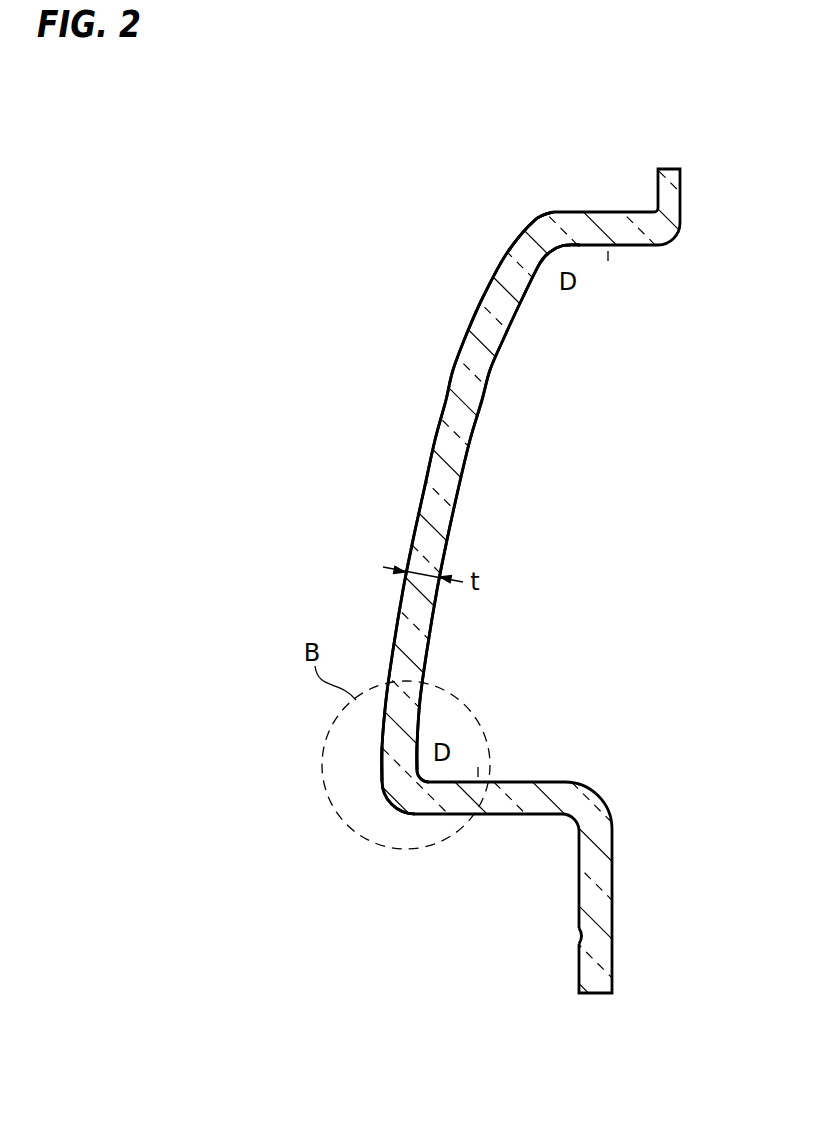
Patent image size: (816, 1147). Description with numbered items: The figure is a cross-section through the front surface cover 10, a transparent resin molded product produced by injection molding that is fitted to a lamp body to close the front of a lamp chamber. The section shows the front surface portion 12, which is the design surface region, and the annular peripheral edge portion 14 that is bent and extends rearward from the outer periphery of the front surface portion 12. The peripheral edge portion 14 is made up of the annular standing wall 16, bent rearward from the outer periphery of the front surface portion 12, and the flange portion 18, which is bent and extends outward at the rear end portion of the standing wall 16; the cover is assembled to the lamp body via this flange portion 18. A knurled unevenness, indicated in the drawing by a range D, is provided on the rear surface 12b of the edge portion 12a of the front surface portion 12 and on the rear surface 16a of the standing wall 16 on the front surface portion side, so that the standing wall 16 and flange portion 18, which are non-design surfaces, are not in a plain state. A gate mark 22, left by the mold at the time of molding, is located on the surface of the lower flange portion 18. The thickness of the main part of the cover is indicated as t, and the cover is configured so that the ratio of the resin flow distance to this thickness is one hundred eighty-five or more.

The front surface cover 10 is at (612, 1113).
The front surface portion 12 is at (420, 497).
The edge portion 12a is at (505, 257).
The rear surface 12b is at (560, 256).
The peripheral edge portion 14 is at (617, 190).
The standing wall 16 is at (597, 212).
The rear surface 16a is at (560, 256).
The flange portion 18 is at (657, 182).
The gate mark 22 is at (580, 936).